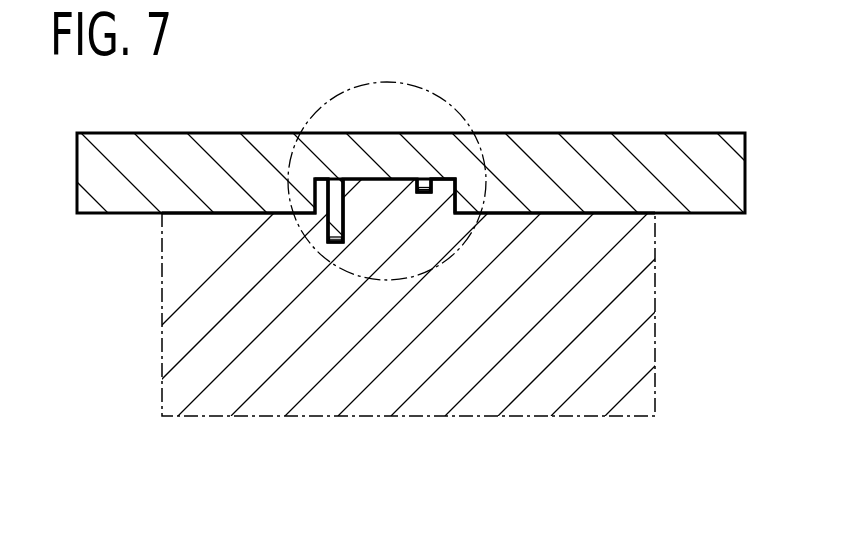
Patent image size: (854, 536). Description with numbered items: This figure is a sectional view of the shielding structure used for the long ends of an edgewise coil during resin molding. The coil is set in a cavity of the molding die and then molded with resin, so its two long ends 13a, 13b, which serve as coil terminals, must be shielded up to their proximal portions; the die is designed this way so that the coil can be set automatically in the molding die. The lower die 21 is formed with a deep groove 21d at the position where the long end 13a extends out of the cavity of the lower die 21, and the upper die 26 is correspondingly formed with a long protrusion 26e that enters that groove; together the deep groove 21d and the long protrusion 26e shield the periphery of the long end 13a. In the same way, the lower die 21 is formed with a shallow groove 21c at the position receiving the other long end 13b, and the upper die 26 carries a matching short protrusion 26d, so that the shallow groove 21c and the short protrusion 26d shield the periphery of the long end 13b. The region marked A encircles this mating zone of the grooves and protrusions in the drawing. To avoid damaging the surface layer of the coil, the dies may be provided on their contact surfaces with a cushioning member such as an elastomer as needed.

The lower die 21 is at (470, 393).
The upper die 26 is at (569, 140).
The long protrusion 26e is at (338, 207).
The short protrusion 26d is at (422, 183).
The deep groove 21d is at (330, 237).
The shallow groove 21c is at (452, 198).
The long end 13a is at (337, 243).
The long end 13b is at (422, 193).
The enlarged region A is at (363, 82).